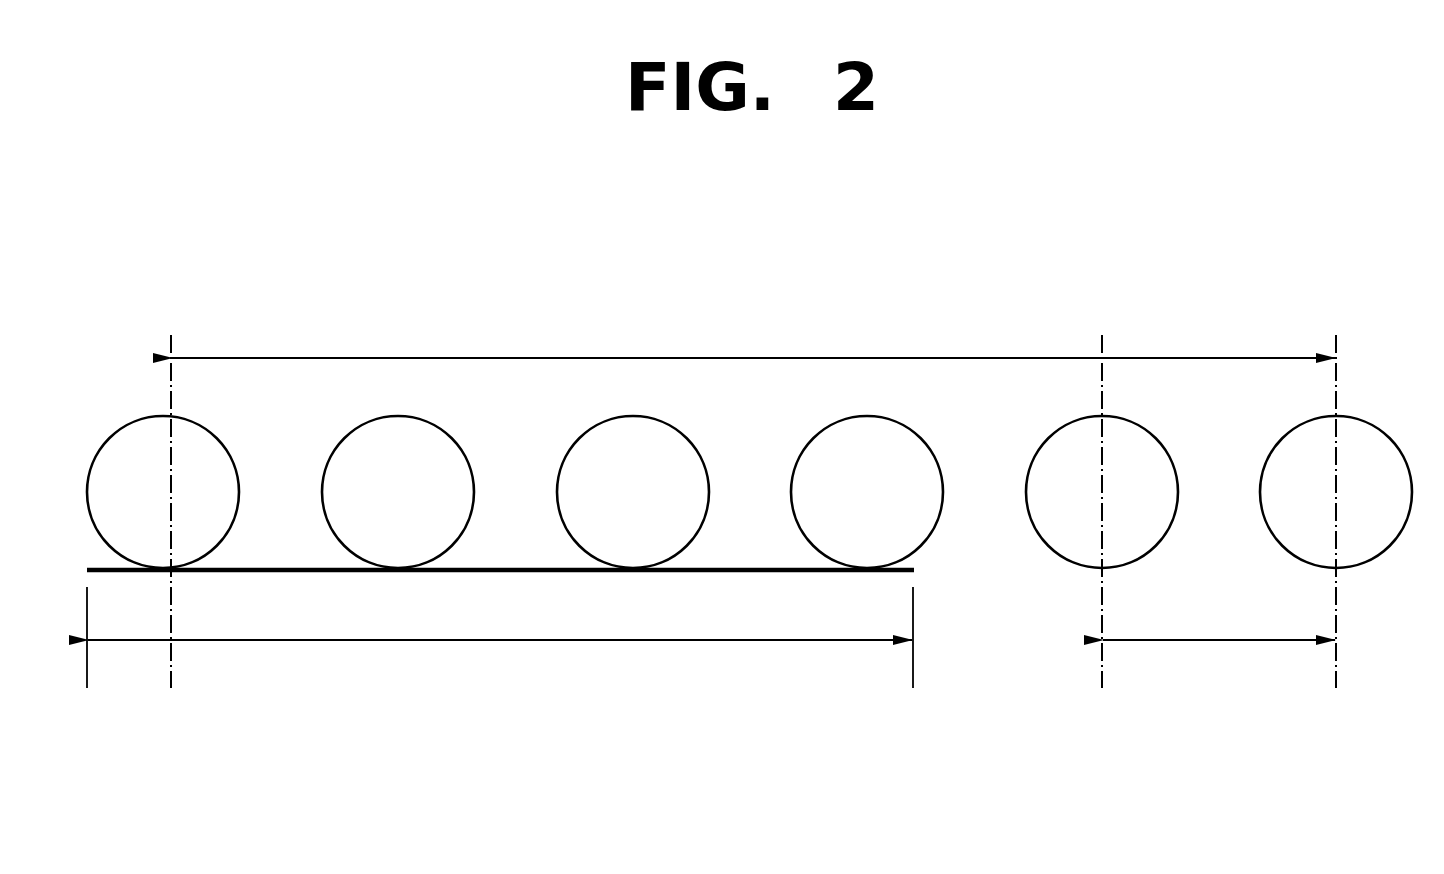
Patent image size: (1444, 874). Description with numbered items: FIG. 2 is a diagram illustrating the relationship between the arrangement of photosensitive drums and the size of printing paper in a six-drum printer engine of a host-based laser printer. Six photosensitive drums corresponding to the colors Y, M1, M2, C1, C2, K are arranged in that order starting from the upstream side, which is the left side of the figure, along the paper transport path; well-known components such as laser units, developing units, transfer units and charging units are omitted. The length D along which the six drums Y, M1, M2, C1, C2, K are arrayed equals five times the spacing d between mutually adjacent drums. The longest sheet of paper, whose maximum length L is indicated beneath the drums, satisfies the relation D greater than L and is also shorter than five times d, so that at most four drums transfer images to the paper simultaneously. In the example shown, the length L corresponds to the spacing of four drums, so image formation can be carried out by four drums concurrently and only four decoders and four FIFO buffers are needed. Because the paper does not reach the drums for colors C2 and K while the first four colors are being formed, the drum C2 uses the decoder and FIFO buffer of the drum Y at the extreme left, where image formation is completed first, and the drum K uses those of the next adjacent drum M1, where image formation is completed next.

The yellow photosensitive drum Y is at (163, 492).
The first magenta photosensitive drum M1 is at (398, 492).
The second magenta photosensitive drum M2 is at (633, 492).
The first cyan photosensitive drum C1 is at (867, 492).
The second cyan photosensitive drum C2 is at (1102, 492).
The black photosensitive drum K is at (1336, 492).
The length along which the six photosensitive drums are arrayed D is at (753, 340).
The maximum length of usable printing paper L is at (500, 637).
The spacing between mutually adjacent photosensitive drums d is at (1219, 664).